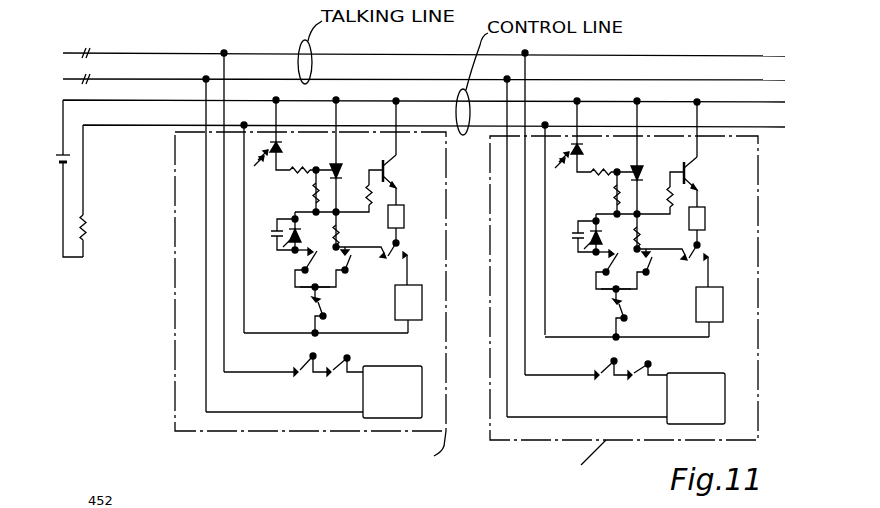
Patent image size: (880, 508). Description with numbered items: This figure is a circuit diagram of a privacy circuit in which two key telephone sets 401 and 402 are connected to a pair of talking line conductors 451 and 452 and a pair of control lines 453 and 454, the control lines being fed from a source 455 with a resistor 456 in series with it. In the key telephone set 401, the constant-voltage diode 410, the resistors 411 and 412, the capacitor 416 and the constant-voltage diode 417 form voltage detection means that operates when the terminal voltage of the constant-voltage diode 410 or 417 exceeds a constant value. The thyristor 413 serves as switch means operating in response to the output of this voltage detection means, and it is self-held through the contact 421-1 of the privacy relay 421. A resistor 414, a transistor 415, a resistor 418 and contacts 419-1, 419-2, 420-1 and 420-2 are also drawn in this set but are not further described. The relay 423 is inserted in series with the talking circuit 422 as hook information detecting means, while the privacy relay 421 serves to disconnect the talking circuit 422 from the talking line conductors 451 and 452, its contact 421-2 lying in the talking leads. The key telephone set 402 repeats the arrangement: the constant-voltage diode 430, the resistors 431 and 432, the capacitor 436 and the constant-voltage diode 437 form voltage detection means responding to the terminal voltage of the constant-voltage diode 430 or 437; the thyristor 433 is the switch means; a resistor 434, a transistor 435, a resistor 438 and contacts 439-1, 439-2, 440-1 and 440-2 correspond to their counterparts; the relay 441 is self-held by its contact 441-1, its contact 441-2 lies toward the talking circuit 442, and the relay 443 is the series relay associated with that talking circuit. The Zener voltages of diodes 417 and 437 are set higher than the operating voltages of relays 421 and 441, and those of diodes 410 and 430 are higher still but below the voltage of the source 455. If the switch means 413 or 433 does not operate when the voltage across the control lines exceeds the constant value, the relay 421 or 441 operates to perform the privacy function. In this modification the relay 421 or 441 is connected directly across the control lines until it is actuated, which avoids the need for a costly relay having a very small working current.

The talking line conductor 451 is at (115, 53).
The talking line conductor 452 is at (128, 79).
The control line 453 is at (117, 103).
The control line 454 is at (142, 125).
The source 455 is at (56, 163).
The resistor 456 is at (90, 228).
The key telephone set 401 is at (203, 432).
The key telephone set 402 is at (526, 440).
The constant-voltage diode 410 is at (260, 161).
The resistor 411 is at (301, 167).
The resistor 412 is at (310, 195).
The thyristor 413 is at (342, 172).
The resistor 414 is at (365, 197).
The transistor 415 is at (394, 171).
The capacitor 416 is at (273, 246).
The constant-voltage diode 417 is at (287, 258).
The resistor 418 is at (340, 234).
The contact 419-1 is at (304, 280).
The contact 419-2 is at (365, 263).
The contact 420-1 is at (343, 310).
The contact 420-2 is at (339, 376).
The privacy relay 421 is at (405, 212).
The contact 421-1 is at (410, 260).
The relay contact 421-2 is at (302, 376).
The talking circuit 422 is at (393, 366).
The relay 423 is at (393, 298).
The constant-voltage diode 430 is at (565, 161).
The resistor 431 is at (605, 158).
The resistor 432 is at (594, 195).
The thyristor 433 is at (654, 165).
The resistor 434 is at (652, 197).
The transistor 435 is at (707, 182).
The capacitor 436 is at (571, 235).
The constant-voltage diode 437 is at (585, 264).
The resistor 438 is at (654, 236).
The contact 439-1 is at (589, 292).
The contact 439-2 is at (667, 265).
The contact 440-1 is at (644, 313).
The contact 440-2 is at (642, 384).
The relay 441 is at (714, 224).
The contact 441-1 is at (715, 262).
The relay contact 441-2 is at (598, 383).
The talking circuit 442 is at (616, 388).
The relay 443 is at (688, 312).